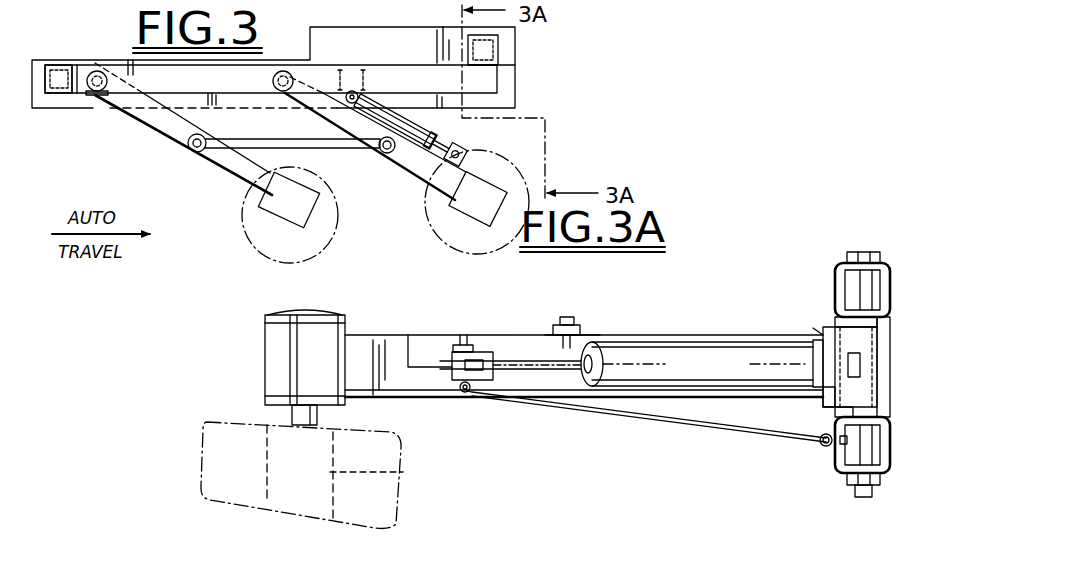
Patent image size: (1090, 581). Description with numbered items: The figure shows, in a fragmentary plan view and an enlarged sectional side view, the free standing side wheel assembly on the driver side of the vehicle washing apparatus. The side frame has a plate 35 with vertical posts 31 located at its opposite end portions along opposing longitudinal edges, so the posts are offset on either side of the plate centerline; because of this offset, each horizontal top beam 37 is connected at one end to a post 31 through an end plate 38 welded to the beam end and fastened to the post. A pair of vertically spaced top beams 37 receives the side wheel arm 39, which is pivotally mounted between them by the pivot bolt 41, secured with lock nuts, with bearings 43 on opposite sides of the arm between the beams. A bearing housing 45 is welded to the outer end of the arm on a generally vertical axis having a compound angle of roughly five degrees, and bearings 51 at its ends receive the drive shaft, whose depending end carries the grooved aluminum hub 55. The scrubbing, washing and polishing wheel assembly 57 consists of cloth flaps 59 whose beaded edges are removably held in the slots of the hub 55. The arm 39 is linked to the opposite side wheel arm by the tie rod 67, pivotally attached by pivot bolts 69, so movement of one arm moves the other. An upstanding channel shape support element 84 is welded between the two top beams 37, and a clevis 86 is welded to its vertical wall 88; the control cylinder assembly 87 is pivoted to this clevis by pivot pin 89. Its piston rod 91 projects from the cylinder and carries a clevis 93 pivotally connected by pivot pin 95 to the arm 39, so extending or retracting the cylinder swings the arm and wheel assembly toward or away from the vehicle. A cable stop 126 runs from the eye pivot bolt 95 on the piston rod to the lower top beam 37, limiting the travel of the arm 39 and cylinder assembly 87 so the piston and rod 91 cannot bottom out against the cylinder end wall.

In FIG. 3, the vertical post 31 is at (58, 66).
In FIG. 3, the plate 35 is at (510, 91).
In FIG. 3, the top beam 37 is at (389, 78).
In FIG. 3A, the top beam 37 is at (837, 270).
In FIG. 3, the end plate 38 is at (77, 95).
In FIG. 3, the side wheel arm 39 is at (160, 123).
In FIG. 3A, the side wheel arm 39 is at (381, 346).
In FIG. 3A, the pivot bolt 41 is at (862, 252).
In FIG. 3, the bearing 43 is at (94, 99).
In FIG. 3A, the bearing 43 is at (837, 327).
In FIG. 3, the bearing housing 45 is at (318, 208).
In FIG. 3A, the bearing housing 45 is at (279, 357).
In FIG. 3A, the bearing 51 is at (283, 307).
In FIG. 3A, the grooved hub 55 is at (403, 475).
In FIG. 3, the side wheel scrubbing, washing and polishing wheel assembly 57 is at (245, 233).
In FIG. 3A, the side wheel scrubbing, washing and polishing wheel assembly 57 is at (199, 424).
In FIG. 3A, the cloth flap 59 is at (203, 470).
In FIG. 3, the tie rod 67 is at (220, 150).
In FIG. 3A, the tie rod 67 is at (584, 331).
In FIG. 3, the pivot bolt 69 is at (284, 70).
In FIG. 3A, the pivot bolt 69 is at (566, 317).
In FIG. 3A, the channel shape support element 84 is at (888, 400).
In FIG. 3, the clevis 86 is at (348, 100).
In FIG. 3A, the clevis 86 is at (827, 400).
In FIG. 3A, the control cylinder assembly 87 is at (702, 363).
In FIG. 3, the vertical wall 88 is at (350, 68).
In FIG. 3A, the vertical wall 88 is at (882, 365).
In FIG. 3, the pivot pin 89 is at (357, 106).
In FIG. 3A, the pivot pin 89 is at (807, 328).
In FIG. 3A, the piston rod 91 is at (547, 370).
In FIG. 3A, the clevis 93 is at (484, 350).
In FIG. 3A, the pivot pin 95 is at (463, 345).
In FIG. 3A, the cable stop 126 is at (574, 412).